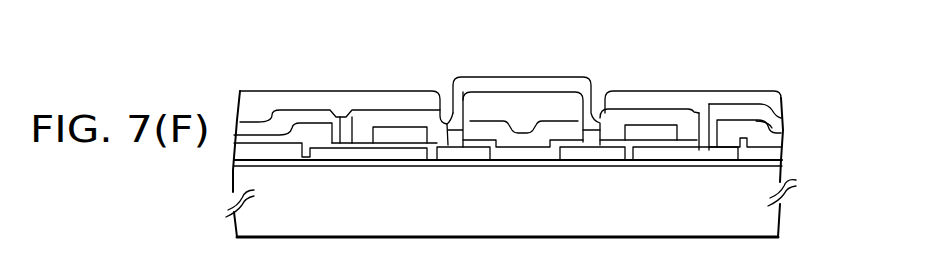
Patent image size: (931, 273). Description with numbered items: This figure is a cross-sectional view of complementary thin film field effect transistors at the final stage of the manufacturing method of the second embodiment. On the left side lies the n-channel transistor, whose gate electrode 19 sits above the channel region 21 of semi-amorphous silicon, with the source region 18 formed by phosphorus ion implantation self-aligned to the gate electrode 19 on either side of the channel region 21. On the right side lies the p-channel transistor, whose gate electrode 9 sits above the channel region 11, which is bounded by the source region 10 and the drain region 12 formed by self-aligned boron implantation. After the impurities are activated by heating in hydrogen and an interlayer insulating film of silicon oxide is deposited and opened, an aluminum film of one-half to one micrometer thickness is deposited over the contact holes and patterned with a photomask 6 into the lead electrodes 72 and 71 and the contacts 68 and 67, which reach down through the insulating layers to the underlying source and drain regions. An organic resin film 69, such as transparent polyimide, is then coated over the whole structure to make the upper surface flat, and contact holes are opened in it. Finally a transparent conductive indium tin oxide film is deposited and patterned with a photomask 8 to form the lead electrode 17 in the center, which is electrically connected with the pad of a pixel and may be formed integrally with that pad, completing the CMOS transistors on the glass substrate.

The photomask 6 is at (347, 120).
The photomask 8 is at (549, 82).
The gate electrode 9 is at (665, 127).
The source region 10 is at (707, 152).
The channel region 11 is at (653, 148).
The drain region 12 is at (618, 147).
The lead electrode 17 is at (508, 82).
The source region 18 is at (318, 152).
The gate electrode 19 is at (402, 135).
The channel region 21 is at (382, 153).
The contact 67 is at (600, 128).
The contact 68 is at (463, 90).
The organic resin film 69 is at (773, 93).
The lead electrode 71 is at (772, 125).
The lead electrode 72 is at (258, 122).